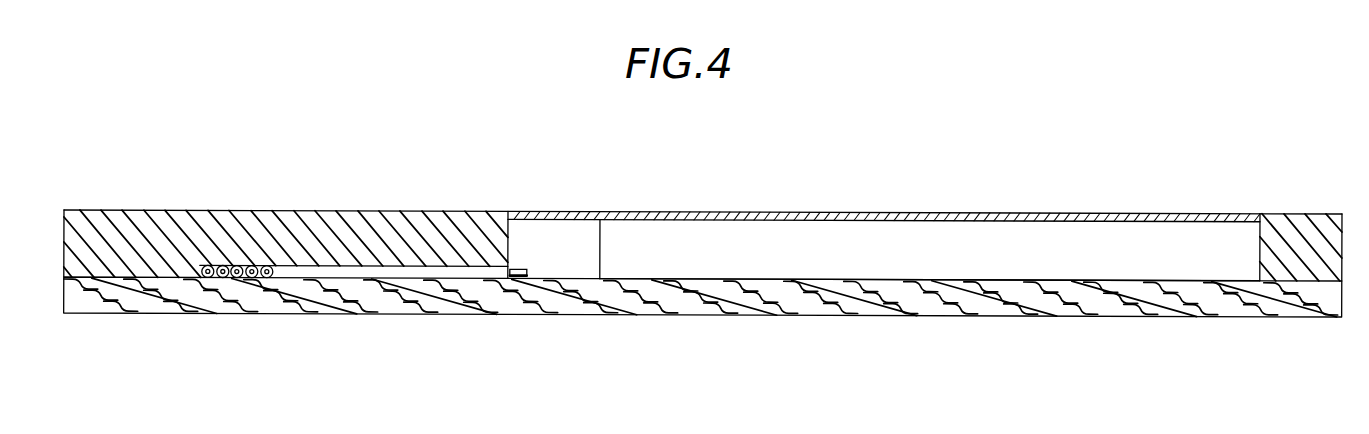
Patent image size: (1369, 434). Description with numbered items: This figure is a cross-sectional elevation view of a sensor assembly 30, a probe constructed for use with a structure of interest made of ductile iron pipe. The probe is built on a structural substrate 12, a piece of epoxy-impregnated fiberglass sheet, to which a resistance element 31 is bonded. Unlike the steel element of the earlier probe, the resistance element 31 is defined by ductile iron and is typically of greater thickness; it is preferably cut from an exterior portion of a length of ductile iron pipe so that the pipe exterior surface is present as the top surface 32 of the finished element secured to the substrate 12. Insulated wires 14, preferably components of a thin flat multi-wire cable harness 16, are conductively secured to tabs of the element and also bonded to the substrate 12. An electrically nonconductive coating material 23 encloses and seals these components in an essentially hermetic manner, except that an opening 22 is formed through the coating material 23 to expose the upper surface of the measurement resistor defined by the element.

The structural substrate 12 is at (778, 305).
The insulated wires 14 is at (357, 273).
The flat multi-wire cable harness 16 is at (238, 265).
The opening 22 is at (603, 217).
The electrically nonconductive coating material 23 is at (98, 225).
The sensor assembly 30 is at (892, 158).
The resistance element 31 is at (1013, 247).
The top surface 32 is at (770, 222).